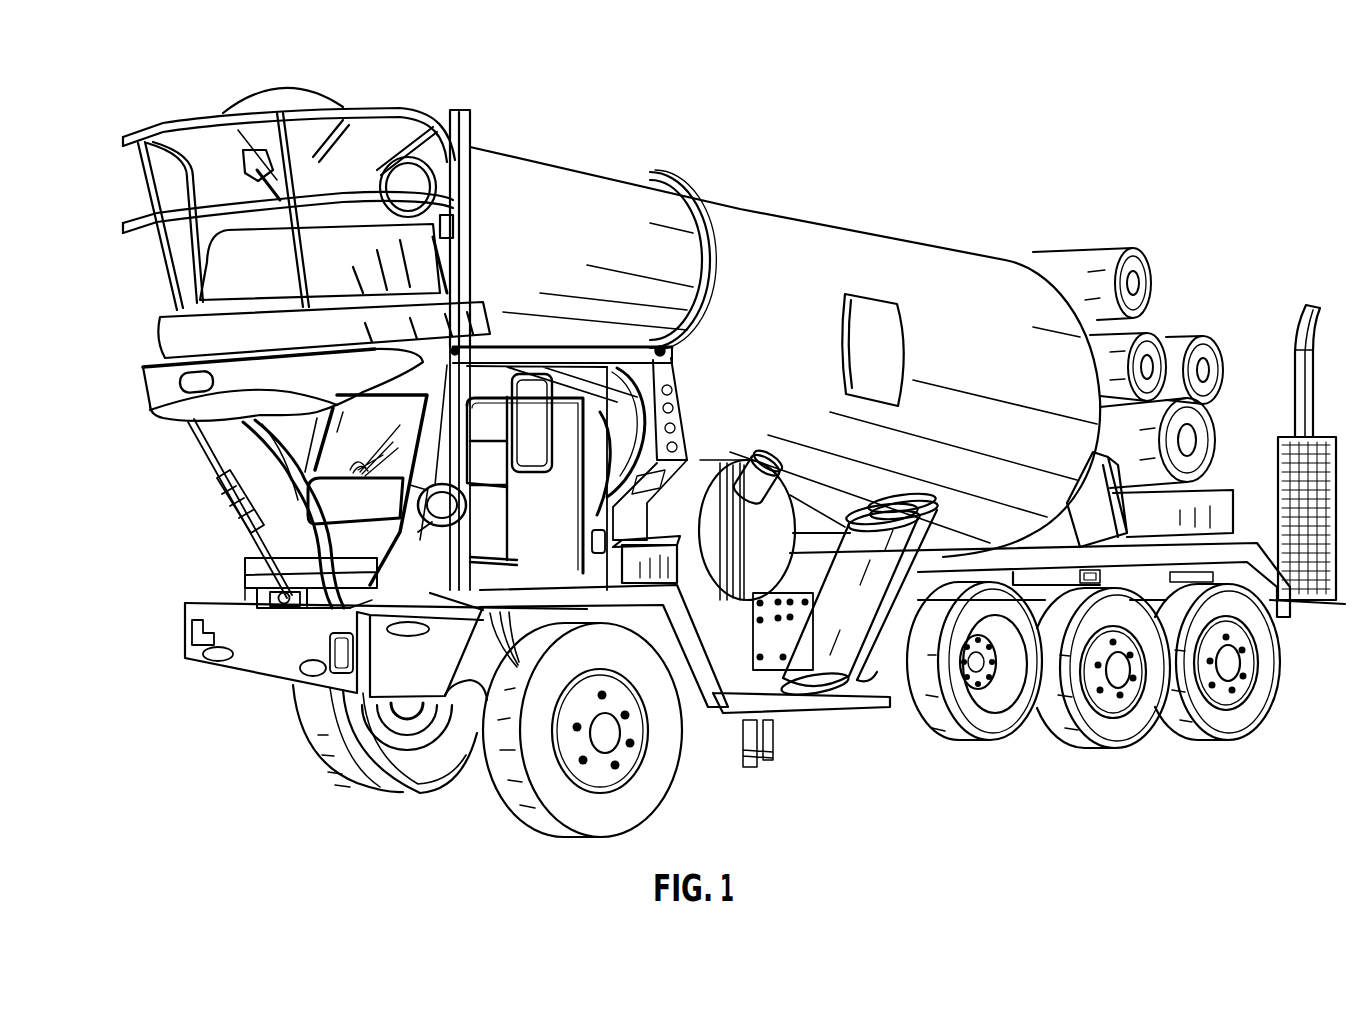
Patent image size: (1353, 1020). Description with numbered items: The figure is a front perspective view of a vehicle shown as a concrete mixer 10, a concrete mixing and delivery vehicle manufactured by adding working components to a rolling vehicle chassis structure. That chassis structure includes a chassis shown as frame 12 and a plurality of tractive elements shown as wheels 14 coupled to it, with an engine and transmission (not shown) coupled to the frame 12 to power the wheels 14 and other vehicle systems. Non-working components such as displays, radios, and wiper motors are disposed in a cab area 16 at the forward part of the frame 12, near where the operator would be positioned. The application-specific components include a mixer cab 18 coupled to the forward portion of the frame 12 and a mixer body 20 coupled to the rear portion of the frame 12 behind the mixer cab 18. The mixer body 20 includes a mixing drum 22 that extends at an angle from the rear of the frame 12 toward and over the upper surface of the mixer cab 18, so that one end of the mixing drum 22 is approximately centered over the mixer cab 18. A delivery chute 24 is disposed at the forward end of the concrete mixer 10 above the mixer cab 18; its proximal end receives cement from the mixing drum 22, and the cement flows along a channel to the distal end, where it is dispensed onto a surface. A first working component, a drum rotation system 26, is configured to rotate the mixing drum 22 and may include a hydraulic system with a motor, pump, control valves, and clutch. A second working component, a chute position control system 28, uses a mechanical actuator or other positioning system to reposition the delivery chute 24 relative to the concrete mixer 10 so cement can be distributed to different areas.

The concrete mixer 10 is at (126, 74).
The frame 12 is at (893, 713).
The wheels 14 is at (653, 775).
The cab area 16 is at (382, 420).
The mixer cab 18 is at (350, 550).
The mixer body 20 is at (873, 328).
The mixing drum 22 is at (760, 258).
The delivery chute 24 is at (183, 417).
The drum rotation system 26 is at (1105, 494).
The chute position control system 28 is at (240, 524).